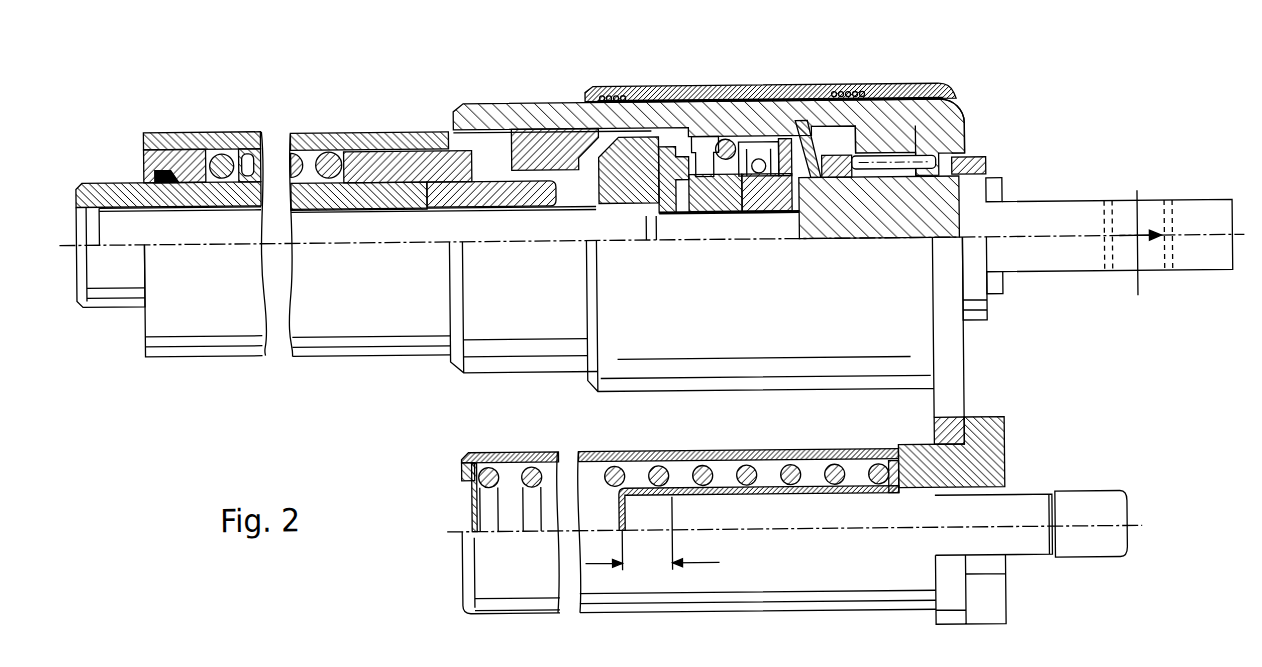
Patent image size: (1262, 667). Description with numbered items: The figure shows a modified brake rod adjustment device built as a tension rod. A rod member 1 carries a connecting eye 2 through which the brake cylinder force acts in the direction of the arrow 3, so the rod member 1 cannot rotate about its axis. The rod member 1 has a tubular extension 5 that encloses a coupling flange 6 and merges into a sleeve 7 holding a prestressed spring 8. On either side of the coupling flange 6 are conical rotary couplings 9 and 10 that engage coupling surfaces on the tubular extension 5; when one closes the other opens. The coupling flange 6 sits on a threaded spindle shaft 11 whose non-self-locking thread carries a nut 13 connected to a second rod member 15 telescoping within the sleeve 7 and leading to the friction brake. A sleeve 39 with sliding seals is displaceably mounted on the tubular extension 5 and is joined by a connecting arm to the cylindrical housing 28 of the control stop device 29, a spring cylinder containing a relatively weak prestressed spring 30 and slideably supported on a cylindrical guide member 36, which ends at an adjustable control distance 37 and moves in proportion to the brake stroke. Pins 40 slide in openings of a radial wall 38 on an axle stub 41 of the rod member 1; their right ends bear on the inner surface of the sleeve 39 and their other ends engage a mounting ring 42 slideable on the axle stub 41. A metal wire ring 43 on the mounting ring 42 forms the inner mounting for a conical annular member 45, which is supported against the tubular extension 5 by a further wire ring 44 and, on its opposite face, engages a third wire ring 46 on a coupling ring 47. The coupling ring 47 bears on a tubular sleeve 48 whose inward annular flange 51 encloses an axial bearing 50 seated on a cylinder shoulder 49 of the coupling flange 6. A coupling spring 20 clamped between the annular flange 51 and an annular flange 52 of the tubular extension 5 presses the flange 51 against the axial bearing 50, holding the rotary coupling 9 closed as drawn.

The rod member 1 is at (1062, 212).
The connecting eye 2 is at (1122, 208).
The arrow 3 is at (1125, 240).
The tubular extension 5 is at (655, 103).
The coupling flange 6 is at (618, 177).
The sleeve 7 is at (311, 135).
The prestressed spring 8 is at (226, 150).
The rotary coupling 9 is at (663, 187).
The rotary coupling 10 is at (592, 140).
The threaded spindle shaft 11 is at (367, 219).
The nut 13 is at (423, 150).
The second rod member 15 is at (118, 218).
The coupling spring 20 is at (683, 112).
The cylindrical housing 28 is at (613, 452).
The control stop device 29 is at (781, 440).
The prestressed spring 30 is at (703, 468).
The guide member 36 is at (1085, 502).
The control distance 37 is at (647, 570).
The radial wall 38 is at (955, 98).
The sleeve 39 is at (593, 96).
The pins 40 is at (962, 140).
The axle stub 41 is at (887, 220).
The mounting ring 42 is at (912, 100).
The wire ring 43 is at (870, 95).
The wire ring 44 is at (818, 115).
The conical annular member 45 is at (808, 125).
The third wire ring 46 is at (800, 118).
The coupling ring 47 is at (760, 120).
The tubular sleeve 48 is at (725, 115).
The cylinder shoulder 49 is at (738, 193).
The axial bearing 50 is at (770, 196).
The annular flange 51 is at (758, 188).
The annular flange 52 is at (681, 205).